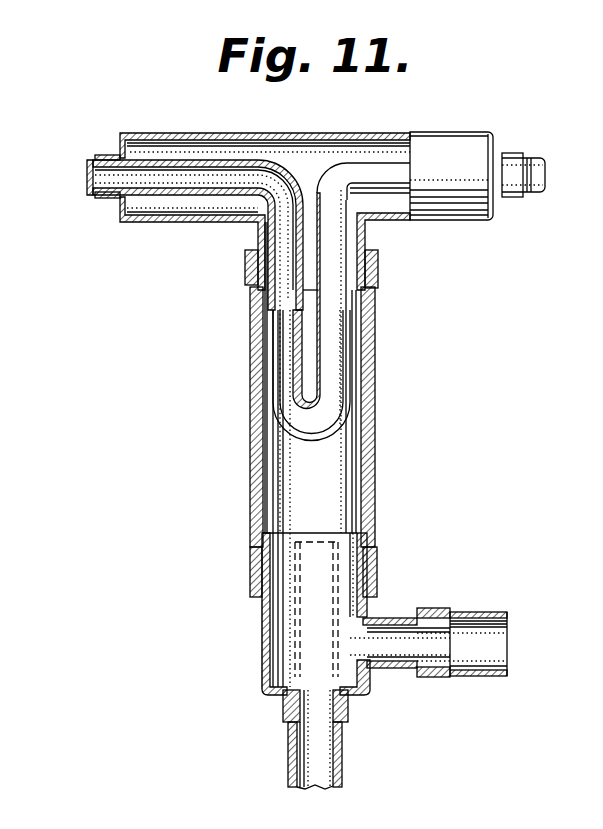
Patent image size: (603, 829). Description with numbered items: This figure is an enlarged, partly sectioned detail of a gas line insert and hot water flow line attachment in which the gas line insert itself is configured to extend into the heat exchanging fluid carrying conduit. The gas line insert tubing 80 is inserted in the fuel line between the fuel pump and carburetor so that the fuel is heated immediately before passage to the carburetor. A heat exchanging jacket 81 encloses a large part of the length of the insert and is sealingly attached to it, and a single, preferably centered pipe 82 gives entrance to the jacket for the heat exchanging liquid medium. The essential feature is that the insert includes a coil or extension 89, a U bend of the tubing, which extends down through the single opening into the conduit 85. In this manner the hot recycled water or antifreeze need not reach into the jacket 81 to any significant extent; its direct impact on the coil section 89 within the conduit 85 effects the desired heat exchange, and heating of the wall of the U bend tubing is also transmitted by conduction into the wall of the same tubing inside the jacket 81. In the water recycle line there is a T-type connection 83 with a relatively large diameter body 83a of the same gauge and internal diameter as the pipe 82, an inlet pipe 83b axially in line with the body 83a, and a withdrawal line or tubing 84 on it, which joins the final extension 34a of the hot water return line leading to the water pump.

The gas line insert tubing 80 is at (537, 162).
The heat exchanging jacket 81 is at (440, 132).
The pipe or tubing 82 is at (365, 238).
The conduit 85 is at (376, 433).
The coil or extension 89 is at (332, 440).
The withdrawal line or tubing 84 is at (384, 617).
The final extension of hot water return line 34a is at (484, 612).
The connection 83 is at (368, 694).
The body 83a is at (262, 670).
The inlet pipe 83b is at (287, 765).